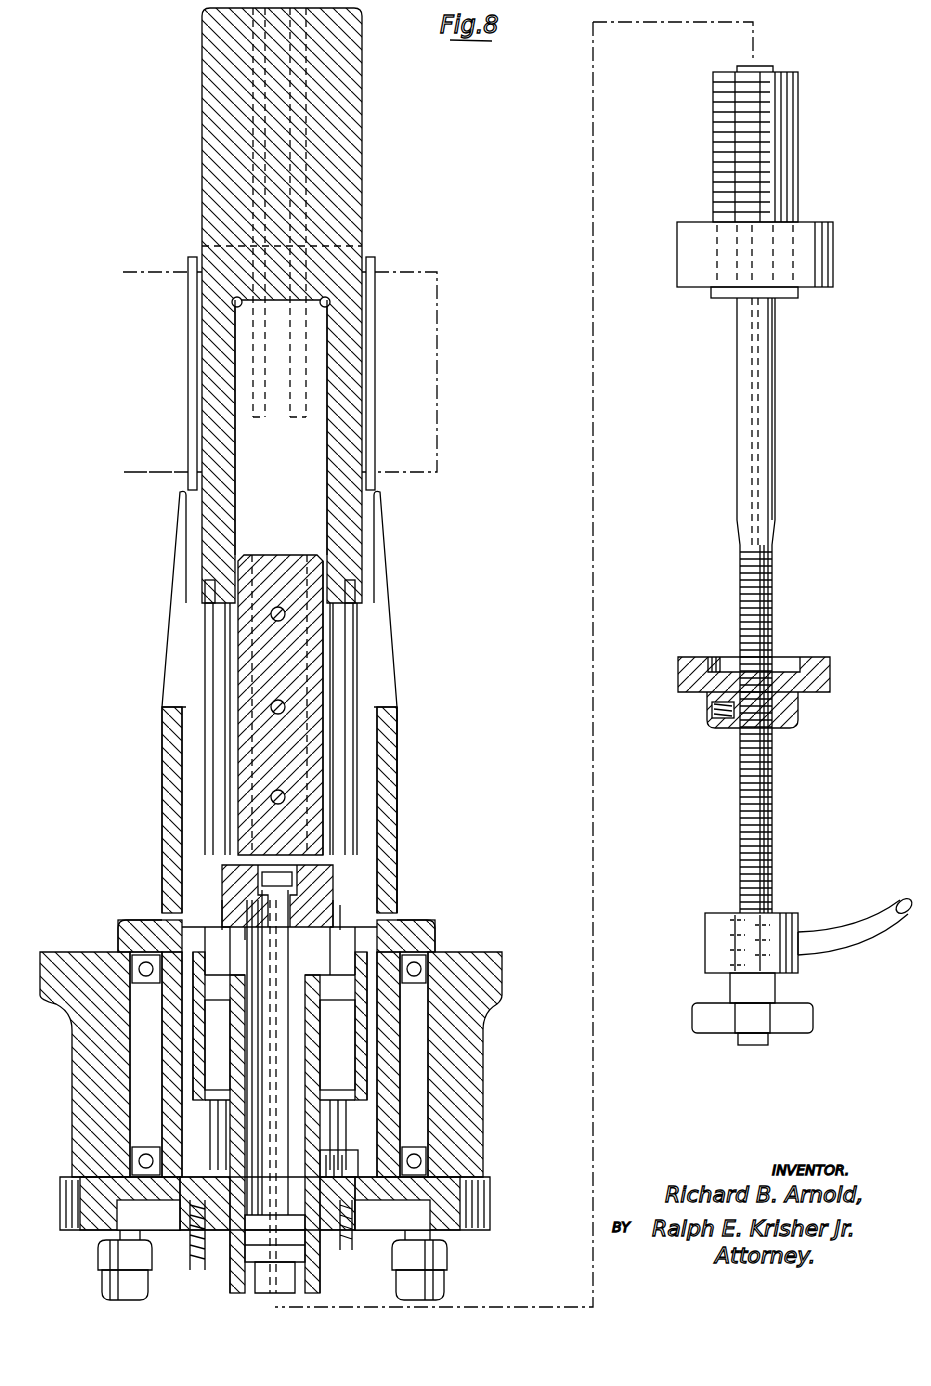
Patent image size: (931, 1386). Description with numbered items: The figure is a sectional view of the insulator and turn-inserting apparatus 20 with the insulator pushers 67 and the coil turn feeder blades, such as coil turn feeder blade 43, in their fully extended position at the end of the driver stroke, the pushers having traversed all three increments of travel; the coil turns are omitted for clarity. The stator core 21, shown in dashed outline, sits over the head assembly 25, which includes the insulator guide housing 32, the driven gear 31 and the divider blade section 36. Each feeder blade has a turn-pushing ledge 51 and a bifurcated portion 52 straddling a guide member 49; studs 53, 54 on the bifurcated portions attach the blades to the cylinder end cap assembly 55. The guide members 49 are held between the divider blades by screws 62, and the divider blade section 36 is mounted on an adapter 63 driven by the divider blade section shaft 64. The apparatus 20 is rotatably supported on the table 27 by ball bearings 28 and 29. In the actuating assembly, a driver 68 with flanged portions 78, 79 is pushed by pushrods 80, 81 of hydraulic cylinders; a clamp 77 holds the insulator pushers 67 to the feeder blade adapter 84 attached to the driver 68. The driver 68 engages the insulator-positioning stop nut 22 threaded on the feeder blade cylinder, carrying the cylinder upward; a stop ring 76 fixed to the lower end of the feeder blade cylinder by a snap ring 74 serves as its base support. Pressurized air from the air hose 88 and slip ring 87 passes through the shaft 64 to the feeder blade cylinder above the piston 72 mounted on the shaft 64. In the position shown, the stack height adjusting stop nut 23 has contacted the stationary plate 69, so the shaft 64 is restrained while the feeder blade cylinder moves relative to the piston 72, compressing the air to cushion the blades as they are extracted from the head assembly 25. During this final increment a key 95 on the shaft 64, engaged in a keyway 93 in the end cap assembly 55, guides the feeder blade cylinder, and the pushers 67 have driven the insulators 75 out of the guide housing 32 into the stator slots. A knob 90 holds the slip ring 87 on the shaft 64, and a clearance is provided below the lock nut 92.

The insulator and turn-inserting apparatus 20 is at (92, 803).
The stator core 21 is at (440, 365).
The insulator-positioning stop nut 22 is at (340, 1170).
The stack height adjusting stop nut 23 is at (800, 715).
The head assembly 25 is at (411, 824).
The table 27 is at (72, 950).
The ball bearing 28 is at (428, 962).
The ball bearing 29 is at (428, 1165).
The driven gear 31 is at (492, 1196).
The insulator guide housing 32 is at (163, 752).
The divider blade section 36 is at (336, 692).
The coil turn feeder blade 43 is at (363, 160).
The guide member 49 is at (305, 645).
The turn-pushing ledge 51 is at (318, 247).
The bifurcated portion 52 is at (352, 450).
The stud 53 is at (205, 723).
The stud 54 is at (346, 735).
The cylinder end cap assembly 55 is at (362, 936).
The screw 62 is at (272, 798).
The adapter 63 is at (322, 880).
The divider blade section shaft 64 is at (778, 455).
The insulator pusher 67 is at (372, 787).
The driver 68 is at (362, 1262).
The stationary plate 69 is at (832, 670).
The piston 72 is at (258, 1240).
The snap ring 74 is at (800, 292).
The insulator 75 is at (372, 338).
The stop ring 76 is at (835, 255).
The clamp 77 is at (378, 1225).
The flanged portion 78 is at (110, 1265).
The flanged portion 79 is at (440, 1268).
The pushrod 80 is at (110, 1298).
The pushrod 81 is at (440, 1298).
The feeder blade adapter 84 is at (190, 1225).
The slip ring 87 is at (781, 914).
The air hose 88 is at (847, 924).
The knob 90 is at (815, 1016).
The lock nut 92 is at (770, 1040).
The keyway 93 is at (245, 930).
The key 95 is at (262, 1058).